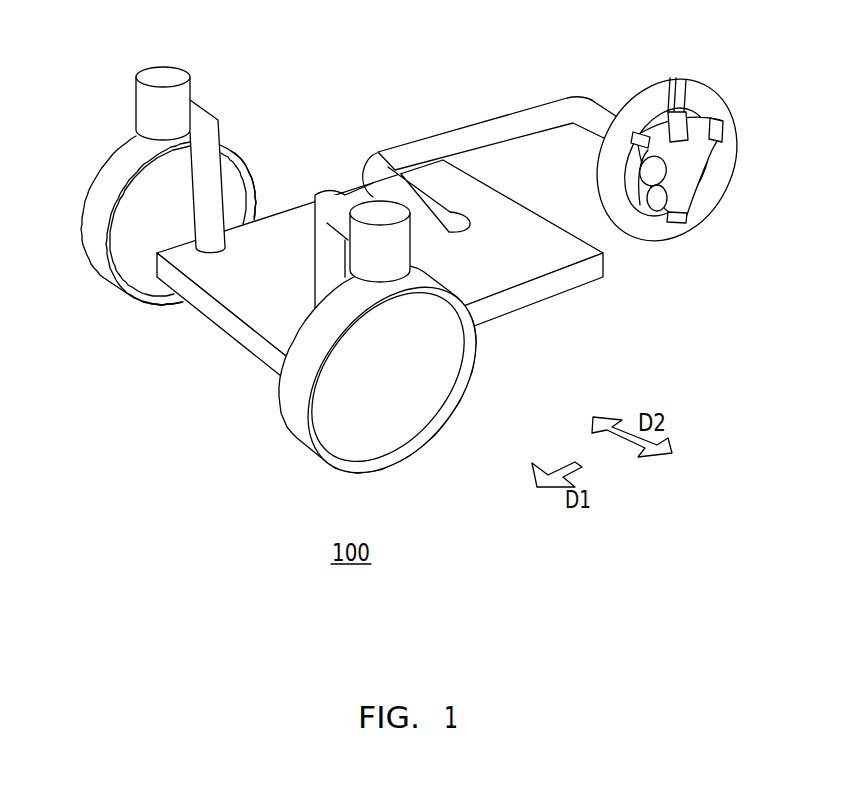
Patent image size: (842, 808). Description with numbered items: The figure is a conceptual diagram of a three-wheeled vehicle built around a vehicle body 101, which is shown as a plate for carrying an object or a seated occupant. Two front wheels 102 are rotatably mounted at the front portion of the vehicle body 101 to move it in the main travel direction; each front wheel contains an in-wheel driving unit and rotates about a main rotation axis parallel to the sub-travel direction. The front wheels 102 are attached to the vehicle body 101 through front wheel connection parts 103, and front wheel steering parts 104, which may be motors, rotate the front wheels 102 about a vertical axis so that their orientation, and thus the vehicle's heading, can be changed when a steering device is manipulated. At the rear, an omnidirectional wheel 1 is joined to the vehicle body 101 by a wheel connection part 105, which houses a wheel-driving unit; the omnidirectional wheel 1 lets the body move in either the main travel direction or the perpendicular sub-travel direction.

The omnidirectional wheel 1 is at (703, 252).
The vehicle body 101 is at (545, 290).
The front wheels 102 is at (155, 306).
The front wheel connection parts 103 is at (323, 202).
The front wheel steering parts 104 is at (377, 212).
The wheel connection part 105 is at (518, 112).